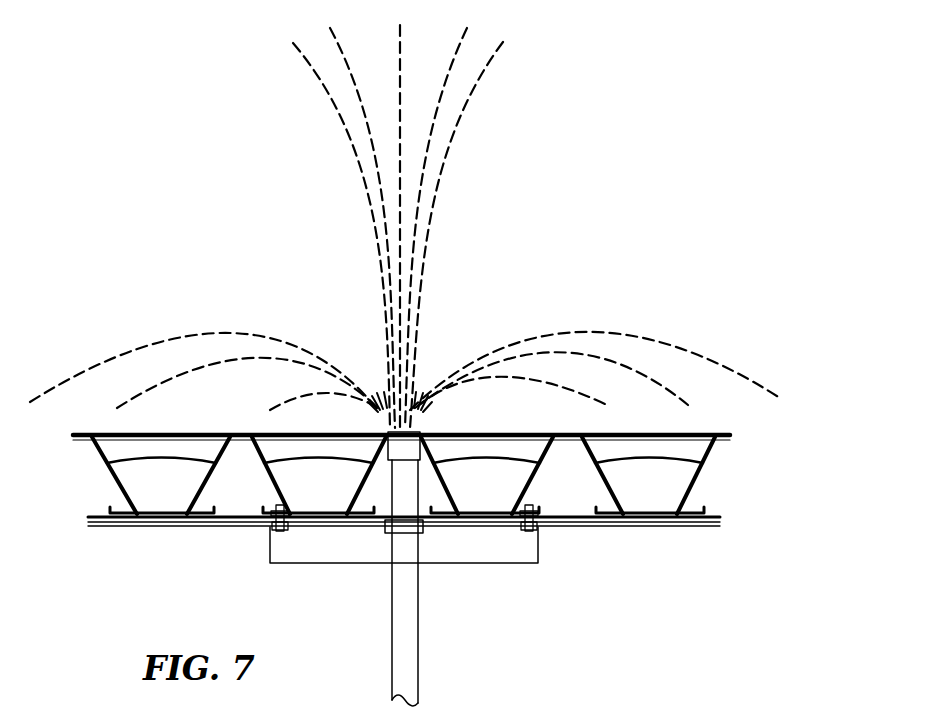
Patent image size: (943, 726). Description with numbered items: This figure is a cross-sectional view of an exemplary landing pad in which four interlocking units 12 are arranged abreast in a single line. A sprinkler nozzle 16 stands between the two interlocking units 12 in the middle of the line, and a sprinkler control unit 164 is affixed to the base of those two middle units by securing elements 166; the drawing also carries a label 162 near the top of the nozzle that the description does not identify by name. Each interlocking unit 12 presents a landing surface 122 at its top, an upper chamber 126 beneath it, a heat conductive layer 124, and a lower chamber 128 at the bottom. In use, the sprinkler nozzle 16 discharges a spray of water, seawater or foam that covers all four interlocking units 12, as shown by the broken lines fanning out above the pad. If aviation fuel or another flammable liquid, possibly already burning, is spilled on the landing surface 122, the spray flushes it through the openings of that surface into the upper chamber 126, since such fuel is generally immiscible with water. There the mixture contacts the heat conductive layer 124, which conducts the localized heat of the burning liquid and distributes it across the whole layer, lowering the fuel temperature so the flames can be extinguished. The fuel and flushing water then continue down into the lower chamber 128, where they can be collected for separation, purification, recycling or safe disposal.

The interlocking unit 12 is at (409, 456).
The sprinkler nozzle 16 is at (402, 675).
The landing surface 122 is at (125, 433).
The heat conductive layer 124 is at (697, 458).
The upper chamber 126 is at (198, 455).
The lower chamber 128 is at (170, 497).
The nozzle 162 is at (413, 427).
The sprinkler control unit 164 is at (518, 535).
The securing element 166 is at (268, 533).